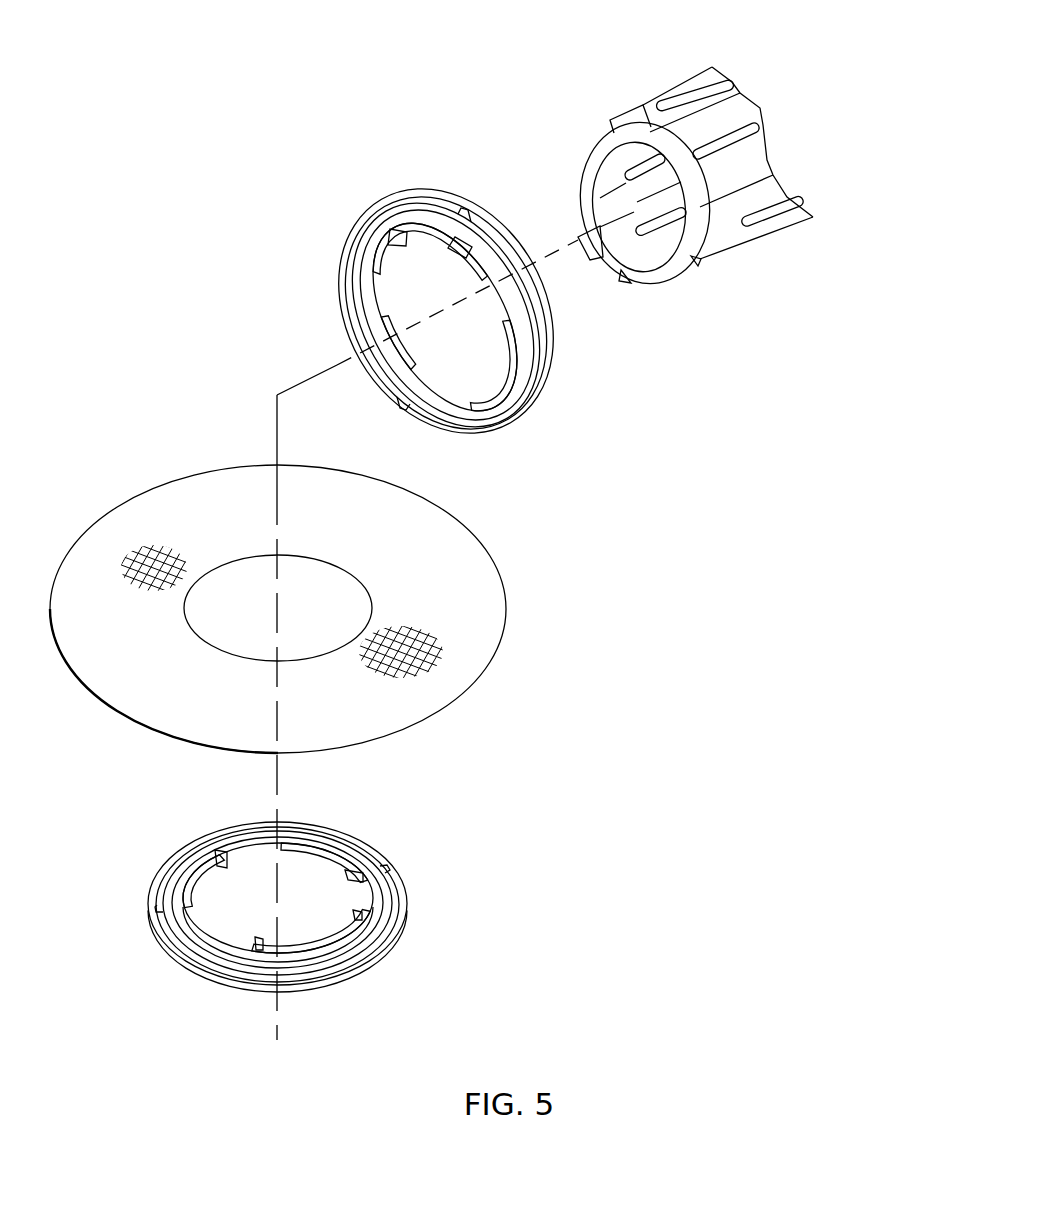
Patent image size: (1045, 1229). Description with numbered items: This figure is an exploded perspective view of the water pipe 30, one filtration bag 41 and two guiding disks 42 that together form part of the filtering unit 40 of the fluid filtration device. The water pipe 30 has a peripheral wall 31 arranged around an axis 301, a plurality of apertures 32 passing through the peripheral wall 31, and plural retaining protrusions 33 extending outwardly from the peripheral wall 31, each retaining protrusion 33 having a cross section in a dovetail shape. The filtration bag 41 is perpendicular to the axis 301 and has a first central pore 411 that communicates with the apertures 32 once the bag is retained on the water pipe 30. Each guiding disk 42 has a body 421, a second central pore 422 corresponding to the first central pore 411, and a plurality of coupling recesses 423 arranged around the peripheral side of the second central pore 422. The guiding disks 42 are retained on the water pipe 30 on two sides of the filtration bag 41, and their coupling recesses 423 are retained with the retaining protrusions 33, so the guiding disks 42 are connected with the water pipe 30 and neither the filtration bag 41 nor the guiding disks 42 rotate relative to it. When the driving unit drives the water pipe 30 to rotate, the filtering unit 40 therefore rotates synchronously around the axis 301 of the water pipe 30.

The water pipe 30 is at (690, 179).
The peripheral wall 31 is at (663, 277).
The apertures 32 is at (737, 133).
The retaining protrusions 33 is at (637, 113).
The axis 301 is at (302, 378).
The filtering unit 40 is at (331, 613).
The filtration bag 41 is at (315, 609).
The first central pore 411 is at (333, 578).
The guiding disk 42 is at (375, 553).
The body 421 is at (348, 240).
The second central pore 422 is at (448, 343).
The coupling recesses 423 is at (423, 233).